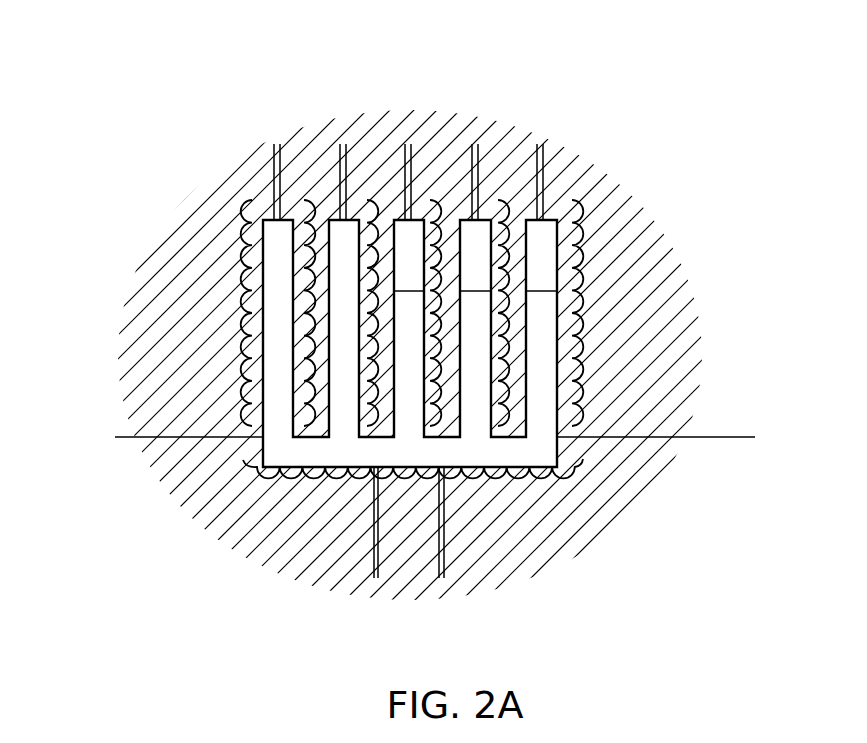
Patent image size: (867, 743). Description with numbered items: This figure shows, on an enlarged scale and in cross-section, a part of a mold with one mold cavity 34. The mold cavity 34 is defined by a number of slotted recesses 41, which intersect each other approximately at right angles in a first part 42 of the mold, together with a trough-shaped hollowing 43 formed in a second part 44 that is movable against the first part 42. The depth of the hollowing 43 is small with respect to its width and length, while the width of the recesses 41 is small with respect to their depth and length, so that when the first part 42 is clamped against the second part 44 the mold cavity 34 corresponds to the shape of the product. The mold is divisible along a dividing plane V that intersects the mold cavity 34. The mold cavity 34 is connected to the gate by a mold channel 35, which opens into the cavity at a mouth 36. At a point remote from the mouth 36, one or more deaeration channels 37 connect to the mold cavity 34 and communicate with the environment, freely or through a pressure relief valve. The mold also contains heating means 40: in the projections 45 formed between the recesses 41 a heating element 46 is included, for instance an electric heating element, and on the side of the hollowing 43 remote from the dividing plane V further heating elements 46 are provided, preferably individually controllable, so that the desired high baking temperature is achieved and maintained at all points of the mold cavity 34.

The mold cavity 34 is at (504, 429).
The mold channel 35 is at (433, 558).
The mouth 36 is at (440, 467).
The deaeration channel 37 is at (540, 148).
The heating means 40 is at (592, 222).
The slotted recess 41 is at (557, 297).
The first part 42 is at (160, 328).
The trough-shaped hollowing 43 is at (295, 453).
The second part 44 is at (530, 550).
The projection 45 is at (315, 423).
The heating element 46 is at (368, 200).
The dividing plane V is at (728, 438).